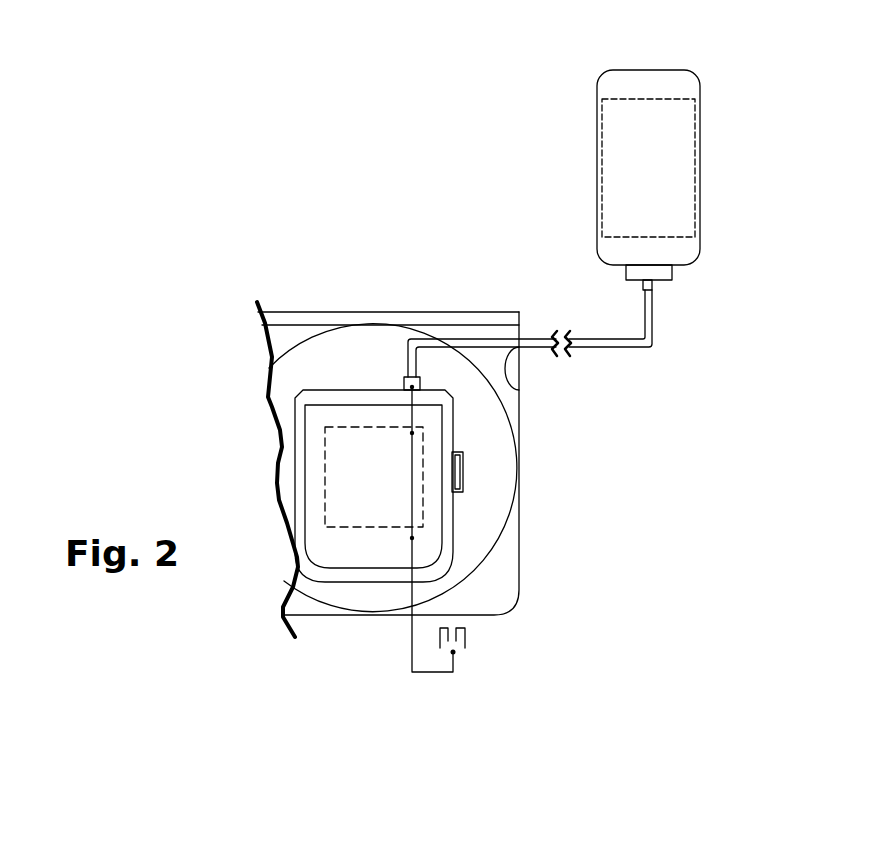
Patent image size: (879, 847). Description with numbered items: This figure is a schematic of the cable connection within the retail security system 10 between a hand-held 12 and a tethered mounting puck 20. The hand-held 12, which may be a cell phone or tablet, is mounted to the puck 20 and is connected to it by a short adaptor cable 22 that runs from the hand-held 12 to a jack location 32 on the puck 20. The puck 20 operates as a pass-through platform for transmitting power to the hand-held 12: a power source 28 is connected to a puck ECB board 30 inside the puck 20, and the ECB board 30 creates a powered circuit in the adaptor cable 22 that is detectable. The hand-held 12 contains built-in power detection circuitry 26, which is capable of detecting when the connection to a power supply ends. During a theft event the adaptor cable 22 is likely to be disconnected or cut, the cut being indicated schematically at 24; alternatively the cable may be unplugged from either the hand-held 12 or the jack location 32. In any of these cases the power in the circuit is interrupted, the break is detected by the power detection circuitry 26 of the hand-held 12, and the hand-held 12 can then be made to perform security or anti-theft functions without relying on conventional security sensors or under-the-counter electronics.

The retail security system 10 is at (486, 200).
The hand-held 12 is at (596, 72).
The puck 20 is at (460, 441).
The adaptor cable 22 is at (659, 333).
The cut in adaptor cable 24 is at (558, 326).
The power detection circuitry 26 is at (607, 126).
The power source 28 is at (472, 638).
The puck ECB board 30 is at (337, 440).
The jack location 32 is at (408, 383).